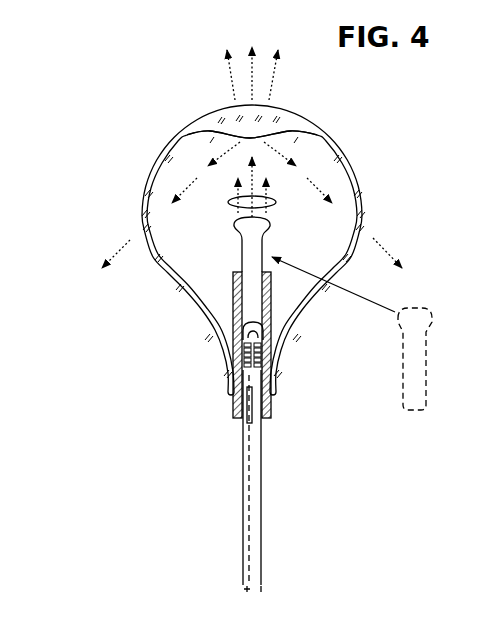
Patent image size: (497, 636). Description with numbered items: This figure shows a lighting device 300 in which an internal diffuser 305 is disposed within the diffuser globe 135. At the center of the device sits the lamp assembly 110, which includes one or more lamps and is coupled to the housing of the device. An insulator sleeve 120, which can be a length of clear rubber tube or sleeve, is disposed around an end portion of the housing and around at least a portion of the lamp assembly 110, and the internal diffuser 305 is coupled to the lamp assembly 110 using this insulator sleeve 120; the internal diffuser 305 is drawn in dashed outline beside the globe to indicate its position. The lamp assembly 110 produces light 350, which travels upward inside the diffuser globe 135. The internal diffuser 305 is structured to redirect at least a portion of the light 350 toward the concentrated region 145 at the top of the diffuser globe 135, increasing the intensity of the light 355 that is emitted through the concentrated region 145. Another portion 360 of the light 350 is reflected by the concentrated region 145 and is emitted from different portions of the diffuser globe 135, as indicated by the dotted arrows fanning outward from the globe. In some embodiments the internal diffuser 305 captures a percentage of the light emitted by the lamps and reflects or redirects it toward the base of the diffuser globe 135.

The lighting device 300 is at (91, 150).
The diffuser globe 135 is at (334, 148).
The concentrated region 145 is at (228, 112).
The light emitted through the concentrated region 355 is at (252, 60).
The light 350 is at (277, 203).
The reflected portion of the light 360 is at (192, 180).
The insulator sleeve 120 is at (270, 313).
The lamp assembly 110 is at (240, 338).
The internal diffuser 305 is at (402, 375).